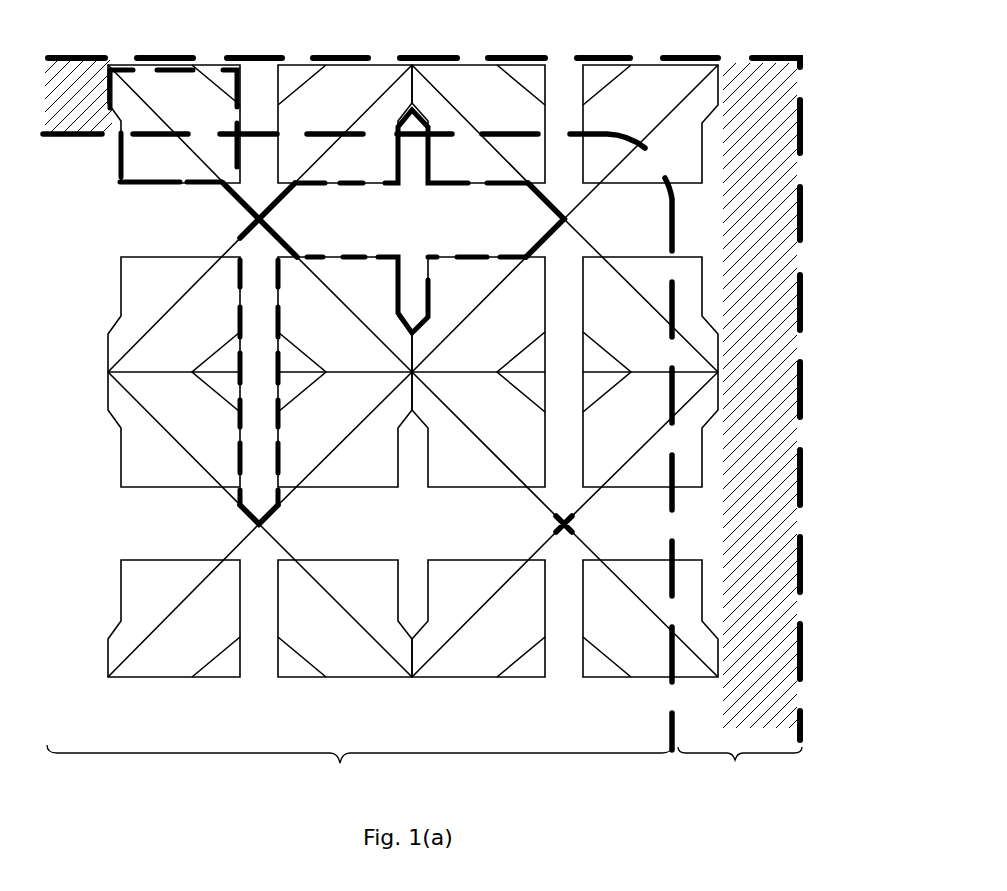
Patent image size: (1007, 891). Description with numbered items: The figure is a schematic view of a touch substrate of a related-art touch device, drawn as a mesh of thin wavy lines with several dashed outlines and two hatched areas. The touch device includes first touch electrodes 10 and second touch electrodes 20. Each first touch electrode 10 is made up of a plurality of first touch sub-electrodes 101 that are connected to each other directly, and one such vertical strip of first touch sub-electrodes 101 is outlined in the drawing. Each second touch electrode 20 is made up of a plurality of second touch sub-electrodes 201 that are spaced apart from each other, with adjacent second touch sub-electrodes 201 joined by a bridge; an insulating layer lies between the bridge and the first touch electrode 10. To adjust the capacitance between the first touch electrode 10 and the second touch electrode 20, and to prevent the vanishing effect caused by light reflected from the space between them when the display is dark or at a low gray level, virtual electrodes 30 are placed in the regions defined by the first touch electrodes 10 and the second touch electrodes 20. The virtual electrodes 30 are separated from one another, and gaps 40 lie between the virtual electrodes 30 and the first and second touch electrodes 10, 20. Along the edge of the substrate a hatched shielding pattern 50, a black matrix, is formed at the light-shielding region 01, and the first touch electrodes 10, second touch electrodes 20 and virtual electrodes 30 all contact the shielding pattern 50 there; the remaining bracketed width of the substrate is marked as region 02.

The first touch electrode 10 is at (257, 80).
The second touch electrode 20 is at (163, 533).
The virtual electrode 30 is at (147, 153).
The gap 40 is at (548, 140).
The shielding pattern 50 is at (73, 107).
The first touch sub-electrode 101 is at (260, 293).
The second touch sub-electrode 201 is at (350, 215).
The light-shielding region 01 is at (740, 428).
The active area 02 is at (359, 770).